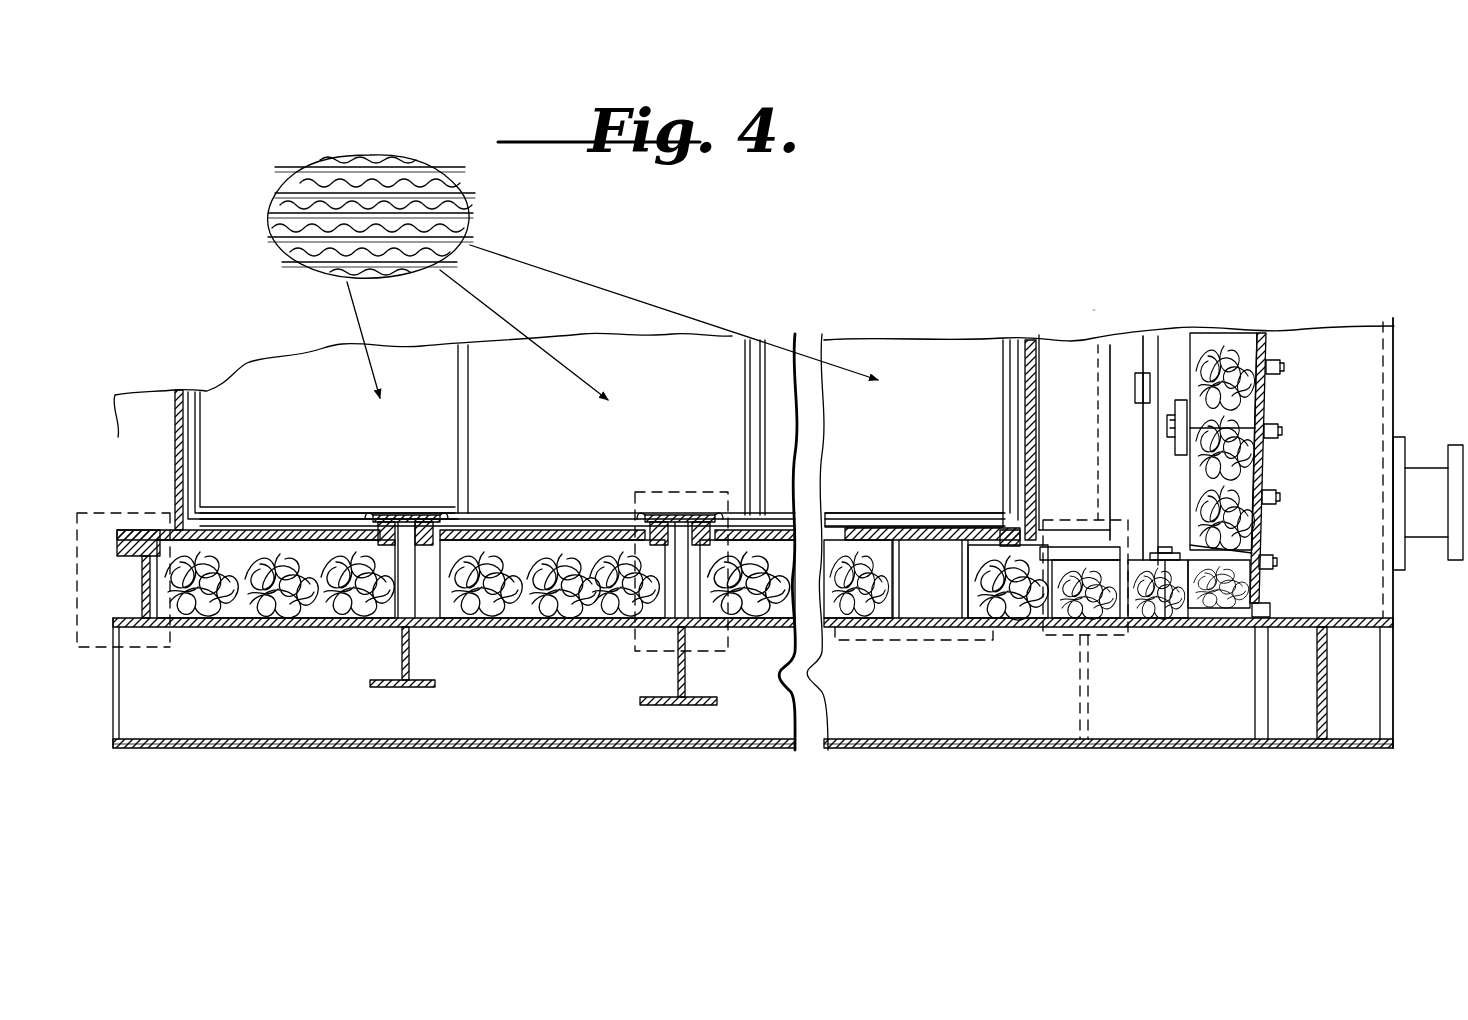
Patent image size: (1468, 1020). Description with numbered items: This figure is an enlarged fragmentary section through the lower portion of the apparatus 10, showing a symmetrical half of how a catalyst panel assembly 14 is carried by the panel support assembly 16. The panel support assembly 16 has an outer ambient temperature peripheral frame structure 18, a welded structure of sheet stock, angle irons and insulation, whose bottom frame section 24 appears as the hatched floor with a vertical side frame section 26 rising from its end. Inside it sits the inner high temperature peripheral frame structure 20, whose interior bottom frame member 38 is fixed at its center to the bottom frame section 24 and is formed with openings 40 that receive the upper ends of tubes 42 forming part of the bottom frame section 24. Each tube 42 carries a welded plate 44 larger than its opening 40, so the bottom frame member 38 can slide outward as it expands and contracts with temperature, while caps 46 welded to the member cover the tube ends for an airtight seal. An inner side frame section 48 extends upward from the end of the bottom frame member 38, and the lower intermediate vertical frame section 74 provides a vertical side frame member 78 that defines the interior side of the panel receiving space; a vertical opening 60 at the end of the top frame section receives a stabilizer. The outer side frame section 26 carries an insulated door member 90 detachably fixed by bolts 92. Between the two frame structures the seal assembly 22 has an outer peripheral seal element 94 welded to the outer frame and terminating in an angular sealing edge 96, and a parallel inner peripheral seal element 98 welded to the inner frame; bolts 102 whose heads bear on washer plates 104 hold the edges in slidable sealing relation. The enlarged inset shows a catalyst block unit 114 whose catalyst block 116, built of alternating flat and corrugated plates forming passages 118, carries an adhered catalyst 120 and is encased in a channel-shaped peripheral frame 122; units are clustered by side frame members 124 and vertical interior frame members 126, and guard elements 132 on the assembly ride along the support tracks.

The apparatus 10 is at (1094, 303).
The catalyst panel assembly 14 is at (800, 338).
The panel support assembly 16 is at (1210, 753).
The outer ambient temperature peripheral frame structure 18 is at (590, 752).
The inner high temperature peripheral frame structure 20 is at (210, 546).
The seal assembly 22 is at (1188, 322).
The bottom frame section 24 is at (724, 750).
The side frame section 26 is at (1375, 405).
The interior bottom frame member 38 is at (290, 535).
The opening 40 is at (408, 524).
The tube 42 is at (435, 602).
The plate 44 is at (455, 533).
The cap 46 is at (376, 518).
The inner side frame section 48 is at (1041, 543).
The vertical opening 60 is at (1093, 348).
The lower intermediate vertical frame section 74 is at (156, 398).
The vertical side frame member 78 is at (180, 440).
The insulated door member 90 is at (1263, 405).
The bolt 92 is at (1272, 560).
The outer peripheral seal element 94 is at (1208, 472).
The angular sealing edge 96 is at (1152, 482).
The inner peripheral seal element 98 is at (1127, 442).
The bolt 102 is at (1143, 388).
The washer plate 104 is at (1136, 378).
The catalyst block unit 114 is at (487, 340).
The catalyst block 116 is at (372, 158).
The passage 118 is at (297, 254).
The catalyst 120 is at (460, 188).
The peripheral frame 122 is at (280, 512).
The side frame member 124 is at (1003, 436).
The vertical interior frame member 126 is at (747, 404).
The guard element 132 is at (1003, 386).